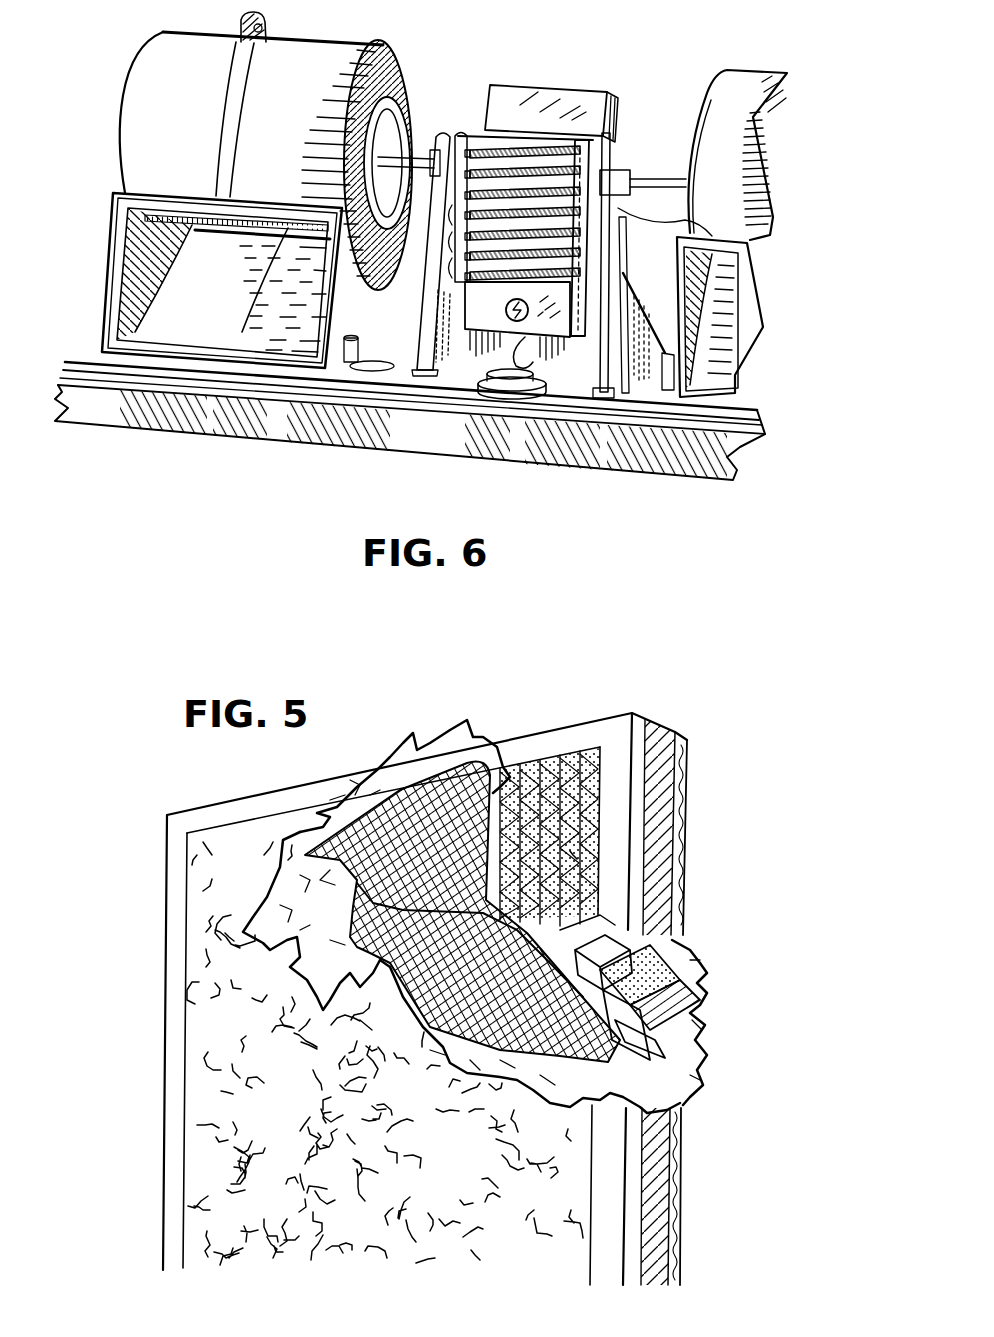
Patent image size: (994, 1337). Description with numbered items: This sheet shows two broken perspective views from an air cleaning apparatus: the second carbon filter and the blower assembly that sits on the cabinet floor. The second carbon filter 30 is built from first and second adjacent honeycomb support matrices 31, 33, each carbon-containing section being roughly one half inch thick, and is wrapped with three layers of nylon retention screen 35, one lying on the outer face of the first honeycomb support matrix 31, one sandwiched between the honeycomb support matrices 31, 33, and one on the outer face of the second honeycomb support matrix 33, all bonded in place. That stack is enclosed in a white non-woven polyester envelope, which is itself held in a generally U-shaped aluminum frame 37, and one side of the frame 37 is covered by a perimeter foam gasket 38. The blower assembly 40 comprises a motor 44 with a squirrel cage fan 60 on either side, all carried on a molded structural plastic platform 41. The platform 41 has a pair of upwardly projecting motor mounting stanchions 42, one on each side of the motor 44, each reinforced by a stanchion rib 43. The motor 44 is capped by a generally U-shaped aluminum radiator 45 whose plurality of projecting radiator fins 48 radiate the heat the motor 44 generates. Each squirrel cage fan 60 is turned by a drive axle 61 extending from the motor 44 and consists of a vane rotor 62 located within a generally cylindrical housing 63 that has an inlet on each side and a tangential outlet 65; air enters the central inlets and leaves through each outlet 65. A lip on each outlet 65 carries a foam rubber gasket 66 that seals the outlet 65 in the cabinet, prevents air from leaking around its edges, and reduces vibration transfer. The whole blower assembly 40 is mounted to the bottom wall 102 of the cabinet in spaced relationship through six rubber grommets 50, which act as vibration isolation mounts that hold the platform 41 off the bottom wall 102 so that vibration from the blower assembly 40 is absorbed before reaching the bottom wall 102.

In FIG. 5, the second carbon filter 30 is at (700, 838).
In FIG. 5, the first honeycomb support matrix 31 is at (605, 955).
In FIG. 5, the second honeycomb support matrix 33 is at (653, 1013).
In FIG. 5, the nylon retention screen 35 is at (418, 853).
In FIG. 5, the aluminum frame 37 is at (640, 1248).
In FIG. 5, the perimeter foam gasket 38 is at (681, 1202).
In FIG. 6, the blower assembly 40 is at (772, 100).
In FIG. 6, the platform 41 is at (253, 387).
In FIG. 6, the motor mounting stanchions 42 is at (425, 290).
In FIG. 6, the stanchion rib 43 is at (647, 306).
In FIG. 6, the motor 44 is at (622, 145).
In FIG. 6, the radiator 45 is at (618, 140).
In FIG. 6, the radiator fins 48 is at (518, 108).
In FIG. 6, the rubber grommet 50 is at (527, 392).
In FIG. 6, the squirrel cage fan 60 is at (297, 72).
In FIG. 6, the drive axle 61 is at (413, 155).
In FIG. 6, the vane rotor 62 is at (393, 118).
In FIG. 6, the cylindrical housing 63 is at (287, 146).
In FIG. 6, the tangential outlet 65 is at (232, 306).
In FIG. 6, the foam rubber gasket 66 is at (106, 268).
In FIG. 6, the bottom wall 102 is at (661, 462).